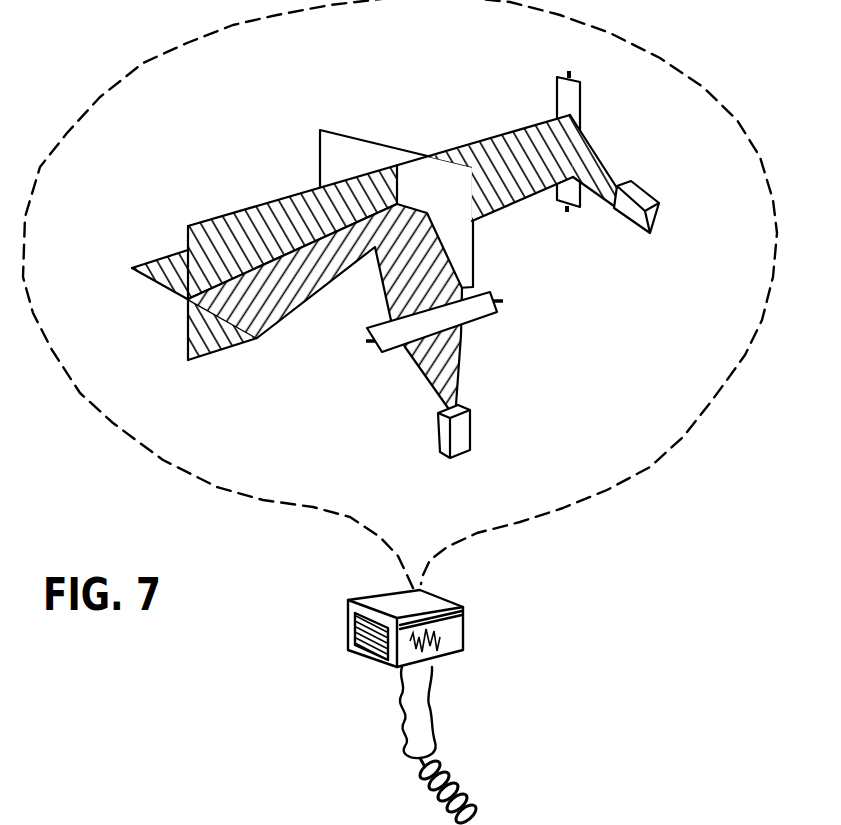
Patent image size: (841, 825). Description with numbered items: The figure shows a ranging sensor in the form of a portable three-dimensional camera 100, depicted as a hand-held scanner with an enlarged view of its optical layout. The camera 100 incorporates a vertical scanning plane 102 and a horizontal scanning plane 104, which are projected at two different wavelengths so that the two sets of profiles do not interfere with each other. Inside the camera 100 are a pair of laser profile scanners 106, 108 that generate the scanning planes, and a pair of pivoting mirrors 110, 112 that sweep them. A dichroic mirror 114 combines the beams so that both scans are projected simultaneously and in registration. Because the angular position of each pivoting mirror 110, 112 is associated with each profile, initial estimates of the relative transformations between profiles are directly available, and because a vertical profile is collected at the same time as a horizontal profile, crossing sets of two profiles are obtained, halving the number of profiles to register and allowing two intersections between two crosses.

The portable 3-D camera 100 is at (328, 692).
The vertical scanning plane 102 is at (218, 336).
The horizontal scanning plane 104 is at (165, 272).
The laser profile scanner 106 is at (462, 440).
The laser profile scanner 108 is at (648, 217).
The pivoting mirror 110 is at (500, 306).
The pivoting mirror 112 is at (577, 100).
The dichroic mirror 114 is at (332, 141).